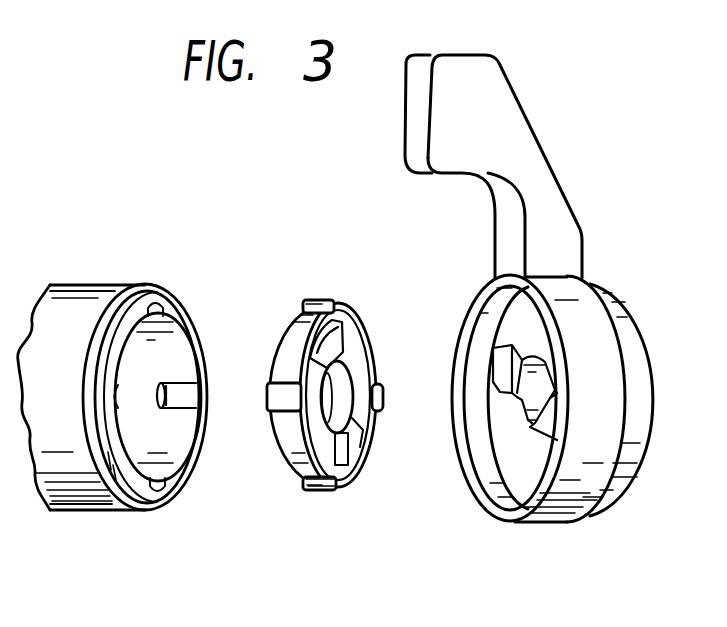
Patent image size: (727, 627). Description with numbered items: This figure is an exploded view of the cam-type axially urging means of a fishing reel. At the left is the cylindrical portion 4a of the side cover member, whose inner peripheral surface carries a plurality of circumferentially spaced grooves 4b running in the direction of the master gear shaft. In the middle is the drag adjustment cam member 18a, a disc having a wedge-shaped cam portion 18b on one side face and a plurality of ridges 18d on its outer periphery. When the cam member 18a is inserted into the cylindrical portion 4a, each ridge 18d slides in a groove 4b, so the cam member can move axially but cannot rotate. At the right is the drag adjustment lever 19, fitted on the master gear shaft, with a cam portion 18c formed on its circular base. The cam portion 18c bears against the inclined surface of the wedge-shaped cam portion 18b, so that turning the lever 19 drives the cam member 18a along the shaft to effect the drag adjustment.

The cylindrical portion 4a is at (93, 284).
The grooves 4b is at (173, 385).
The drag adjustment cam member 18a is at (328, 293).
The wedge-shaped cam portion 18b is at (337, 342).
The cam portion 18c is at (502, 382).
The ridges 18d is at (319, 491).
The drag adjustment lever 19 is at (537, 164).